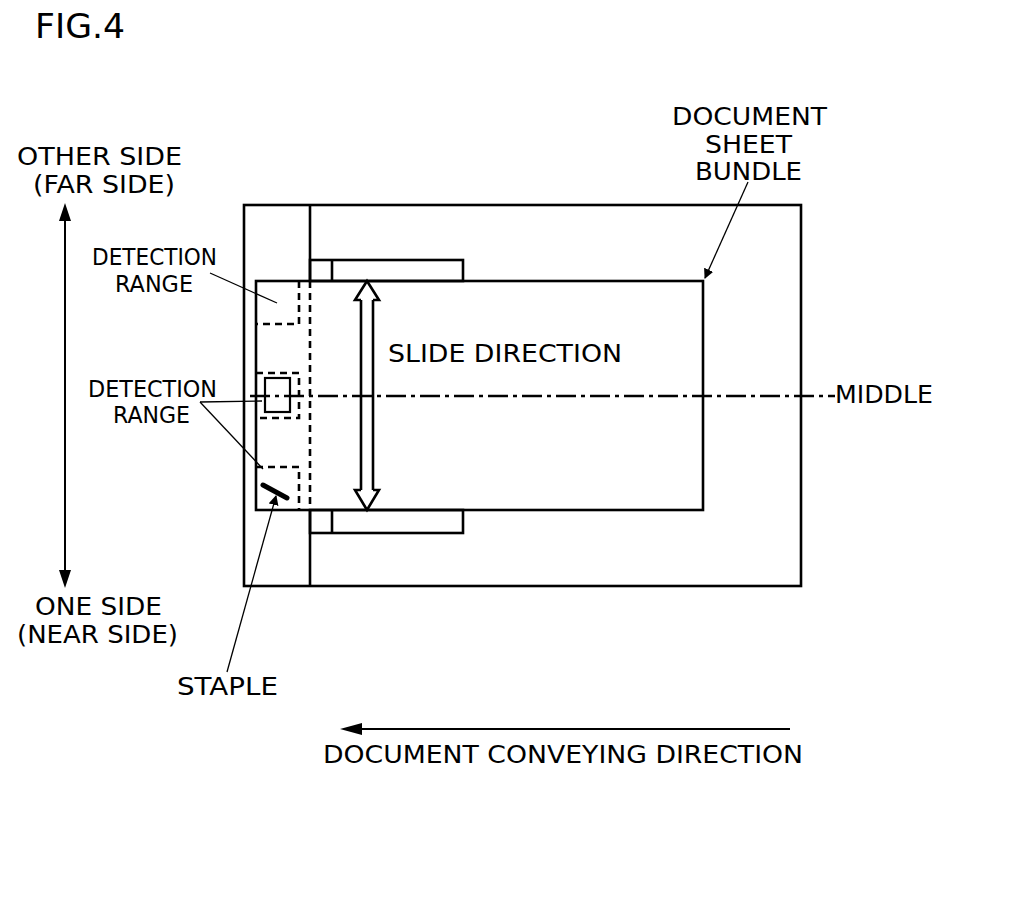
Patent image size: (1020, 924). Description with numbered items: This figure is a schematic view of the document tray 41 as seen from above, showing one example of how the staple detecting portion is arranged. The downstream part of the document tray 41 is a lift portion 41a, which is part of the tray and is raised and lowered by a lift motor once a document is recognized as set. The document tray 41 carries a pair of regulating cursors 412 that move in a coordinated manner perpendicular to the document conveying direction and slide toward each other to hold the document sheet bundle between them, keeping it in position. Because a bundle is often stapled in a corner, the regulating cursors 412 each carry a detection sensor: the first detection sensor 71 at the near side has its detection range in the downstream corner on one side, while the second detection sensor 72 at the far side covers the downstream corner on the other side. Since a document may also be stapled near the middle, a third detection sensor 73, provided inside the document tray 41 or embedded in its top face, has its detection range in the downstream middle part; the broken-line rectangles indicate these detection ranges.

The document tray 41 is at (653, 215).
The lift portion 41a is at (265, 215).
The regulating cursors 412 is at (430, 270).
The first detection sensor 71 is at (322, 522).
The second detection sensor 72 is at (320, 270).
The third detection sensor 73 is at (277, 388).